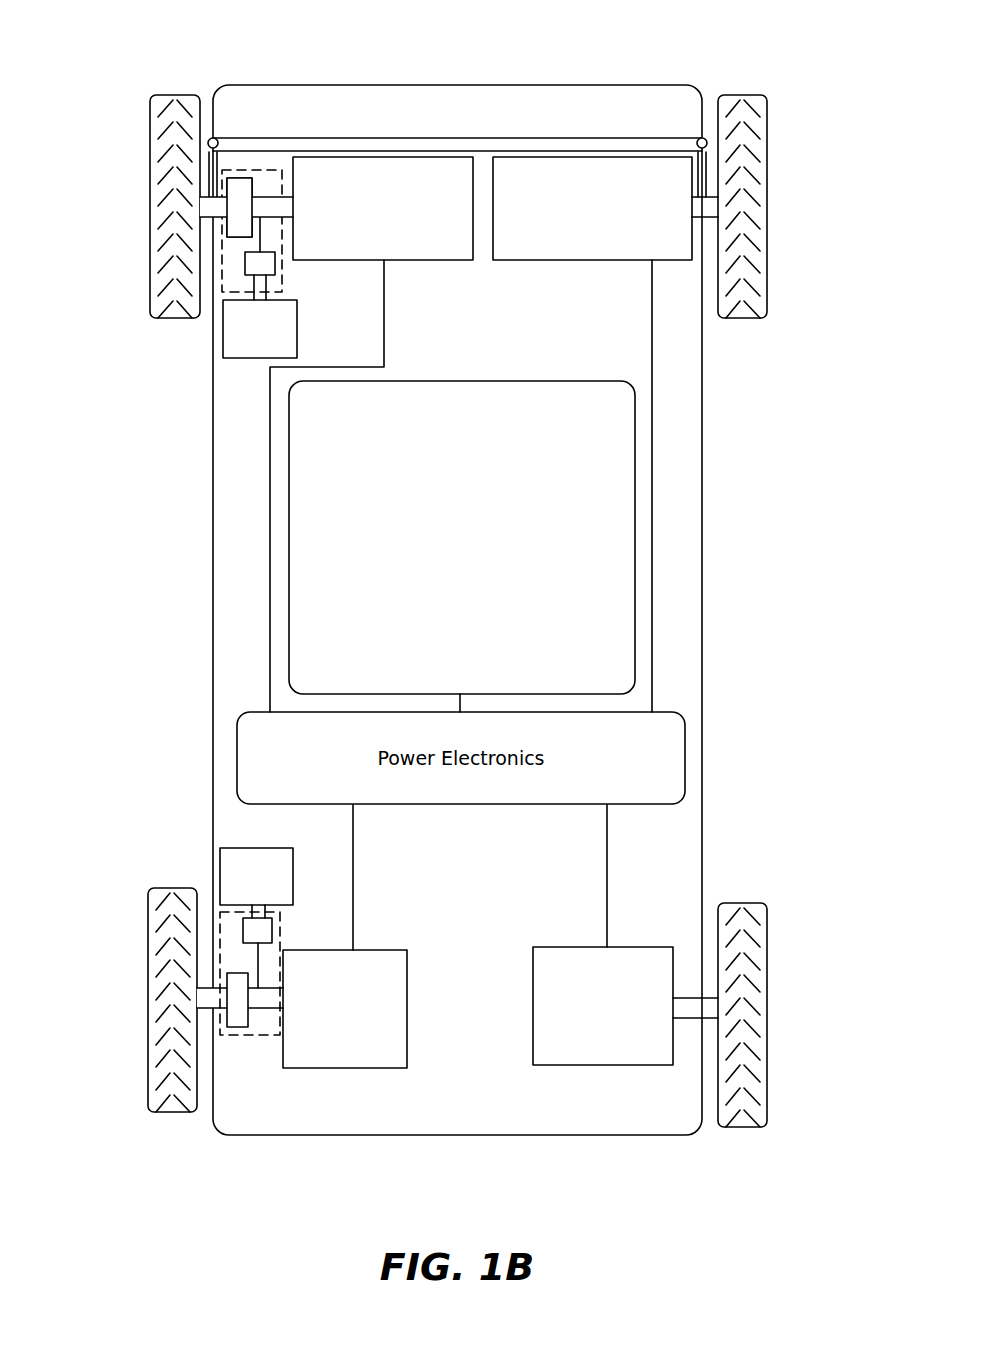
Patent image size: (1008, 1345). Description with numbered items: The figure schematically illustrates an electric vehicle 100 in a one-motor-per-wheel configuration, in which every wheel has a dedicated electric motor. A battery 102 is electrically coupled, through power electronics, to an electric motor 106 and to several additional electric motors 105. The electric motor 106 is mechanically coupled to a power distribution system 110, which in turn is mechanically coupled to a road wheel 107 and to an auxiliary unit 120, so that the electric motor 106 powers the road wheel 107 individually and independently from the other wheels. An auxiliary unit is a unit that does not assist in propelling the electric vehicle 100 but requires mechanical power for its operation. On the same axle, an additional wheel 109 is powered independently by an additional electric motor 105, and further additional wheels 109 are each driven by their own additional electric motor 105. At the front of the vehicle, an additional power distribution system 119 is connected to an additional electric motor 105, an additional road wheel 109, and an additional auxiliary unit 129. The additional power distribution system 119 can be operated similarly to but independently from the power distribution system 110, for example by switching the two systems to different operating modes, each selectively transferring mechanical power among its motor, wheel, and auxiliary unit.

The electric vehicle 100 is at (116, 80).
The battery 102 is at (462, 546).
The additional electric motor 105 is at (481, 611).
The electric motor 106 is at (345, 936).
The road wheel 107 is at (152, 887).
The additional wheel 109 is at (762, 152).
The power distribution system 110 is at (248, 1037).
The additional power distribution system 119 is at (251, 172).
The auxiliary unit 120 is at (228, 858).
The additional auxiliary unit 129 is at (232, 345).